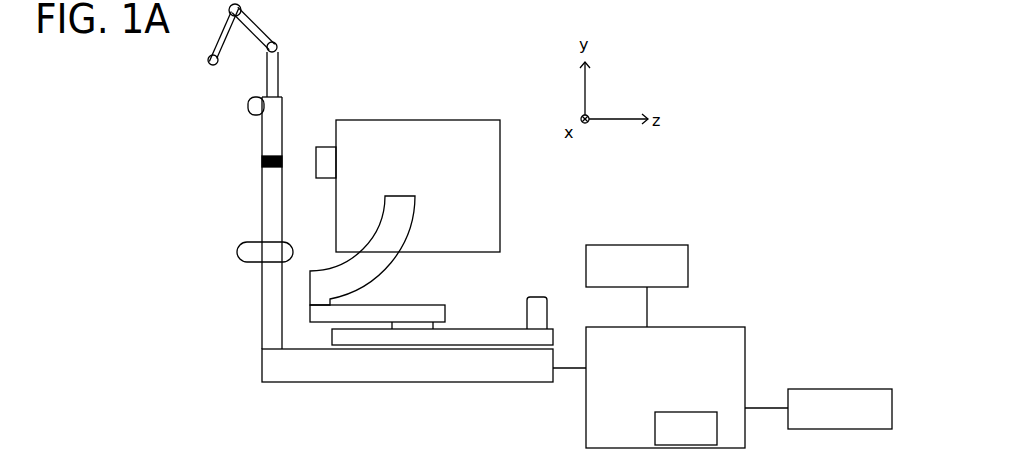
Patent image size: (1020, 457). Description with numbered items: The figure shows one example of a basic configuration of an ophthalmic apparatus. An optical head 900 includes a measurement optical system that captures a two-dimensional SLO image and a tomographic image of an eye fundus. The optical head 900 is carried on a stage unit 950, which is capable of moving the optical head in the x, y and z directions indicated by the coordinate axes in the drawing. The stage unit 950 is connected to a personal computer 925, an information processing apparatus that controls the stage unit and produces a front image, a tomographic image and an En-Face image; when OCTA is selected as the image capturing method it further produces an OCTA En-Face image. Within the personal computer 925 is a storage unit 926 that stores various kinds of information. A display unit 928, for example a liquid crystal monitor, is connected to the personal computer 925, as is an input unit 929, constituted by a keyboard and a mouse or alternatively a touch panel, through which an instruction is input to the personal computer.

The optical head 900 is at (440, 135).
The personal computer 925 is at (710, 333).
The storage unit 926 is at (685, 419).
The display unit 928 is at (663, 250).
The input unit 929 is at (847, 397).
The stage unit 950 is at (382, 340).